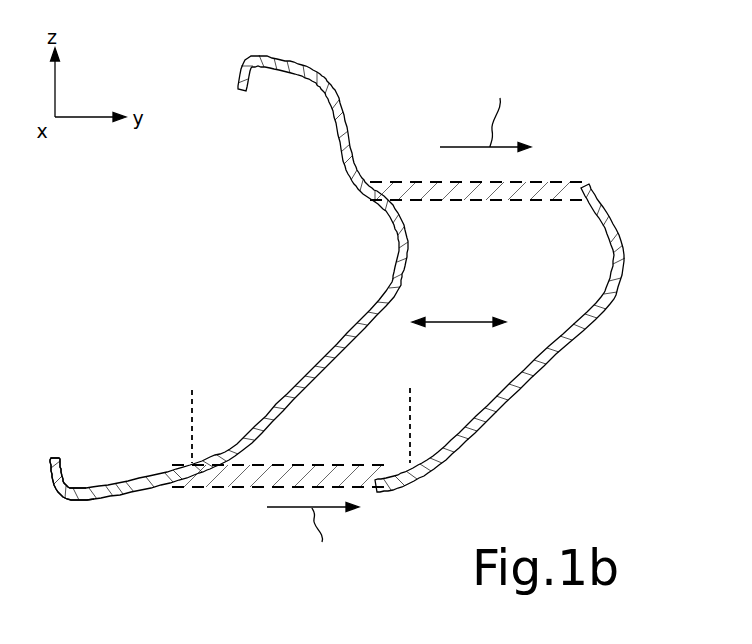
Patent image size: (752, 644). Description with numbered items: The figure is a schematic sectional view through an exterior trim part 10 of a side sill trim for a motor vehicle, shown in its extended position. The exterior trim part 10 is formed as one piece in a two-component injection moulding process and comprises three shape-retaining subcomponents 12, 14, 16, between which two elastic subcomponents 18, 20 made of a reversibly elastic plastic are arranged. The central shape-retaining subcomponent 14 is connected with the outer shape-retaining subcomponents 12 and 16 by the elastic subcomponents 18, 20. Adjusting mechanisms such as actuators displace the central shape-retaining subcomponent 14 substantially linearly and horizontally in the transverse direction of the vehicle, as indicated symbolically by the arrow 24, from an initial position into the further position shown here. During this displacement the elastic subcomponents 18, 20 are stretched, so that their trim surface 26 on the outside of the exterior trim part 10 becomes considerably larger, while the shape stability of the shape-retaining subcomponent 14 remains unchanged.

The exterior trim part 10 is at (649, 127).
The shape-retaining subcomponent 12 is at (308, 70).
The shape-retaining subcomponent 14 is at (577, 342).
The shape-retaining subcomponent 16 is at (90, 500).
The elastic subcomponent 18 is at (545, 178).
The elastic subcomponent 20 is at (360, 487).
The arrow 24 is at (458, 322).
The trim surface 26 is at (401, 155).